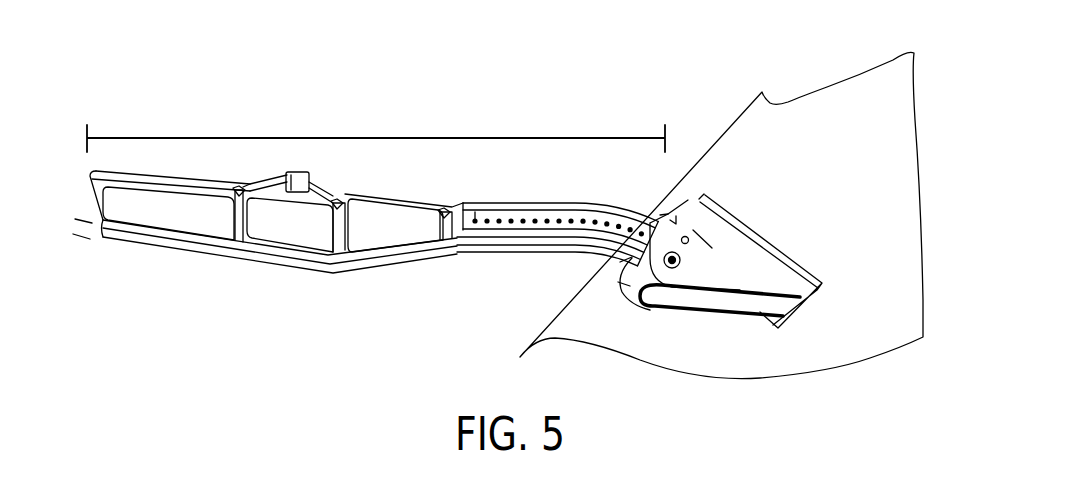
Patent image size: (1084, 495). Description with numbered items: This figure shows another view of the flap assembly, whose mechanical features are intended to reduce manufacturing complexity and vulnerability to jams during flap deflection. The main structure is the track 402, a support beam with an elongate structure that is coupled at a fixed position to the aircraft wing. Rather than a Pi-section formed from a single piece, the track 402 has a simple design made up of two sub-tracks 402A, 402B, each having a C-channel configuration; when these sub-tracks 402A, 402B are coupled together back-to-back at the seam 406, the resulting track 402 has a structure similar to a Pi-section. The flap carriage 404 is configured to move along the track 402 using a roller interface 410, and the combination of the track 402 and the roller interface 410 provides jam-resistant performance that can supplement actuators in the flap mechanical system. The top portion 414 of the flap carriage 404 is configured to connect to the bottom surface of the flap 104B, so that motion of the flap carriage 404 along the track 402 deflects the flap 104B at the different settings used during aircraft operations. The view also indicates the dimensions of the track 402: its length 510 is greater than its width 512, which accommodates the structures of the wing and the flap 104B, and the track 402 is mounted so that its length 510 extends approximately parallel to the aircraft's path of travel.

The flap 104B is at (788, 102).
The track 402 is at (276, 258).
The sub-track 402A is at (343, 276).
The sub-track 402B is at (418, 198).
The flap carriage 404 is at (755, 283).
The seam 406 is at (533, 250).
The roller interface 410 is at (712, 260).
The top portion 414 is at (743, 221).
The length 510 is at (303, 138).
The width 512 is at (87, 222).